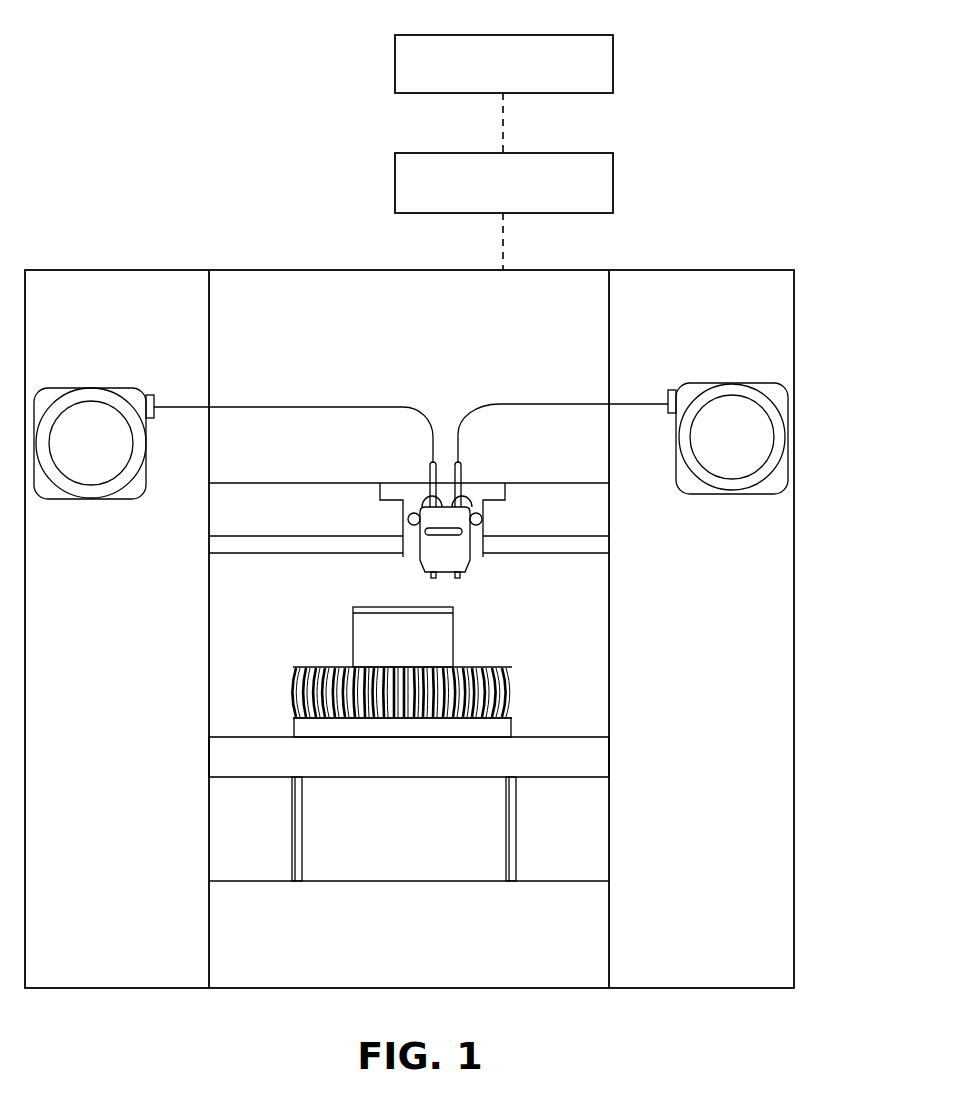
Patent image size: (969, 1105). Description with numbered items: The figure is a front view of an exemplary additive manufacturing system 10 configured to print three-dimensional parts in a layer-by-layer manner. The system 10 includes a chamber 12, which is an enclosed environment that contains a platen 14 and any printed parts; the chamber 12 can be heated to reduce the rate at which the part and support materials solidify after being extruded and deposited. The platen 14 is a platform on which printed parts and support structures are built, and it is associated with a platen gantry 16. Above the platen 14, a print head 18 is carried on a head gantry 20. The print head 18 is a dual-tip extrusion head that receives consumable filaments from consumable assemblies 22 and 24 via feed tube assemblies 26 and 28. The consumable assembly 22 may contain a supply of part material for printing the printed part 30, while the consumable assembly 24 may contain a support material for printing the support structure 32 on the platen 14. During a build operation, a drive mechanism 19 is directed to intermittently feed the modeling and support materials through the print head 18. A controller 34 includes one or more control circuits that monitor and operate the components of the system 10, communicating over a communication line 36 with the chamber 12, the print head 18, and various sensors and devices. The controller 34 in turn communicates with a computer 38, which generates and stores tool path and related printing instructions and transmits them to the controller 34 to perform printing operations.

The additive manufacturing system 10 is at (138, 63).
The chamber 12 is at (223, 687).
The platen 14 is at (603, 768).
The platen gantry 16 is at (522, 862).
The print head 18 is at (490, 520).
The drive mechanism 19 is at (480, 472).
The head gantry 20 is at (282, 533).
The consumable assembly 22 is at (81, 387).
The consumable assembly 24 is at (700, 383).
The feed tube assembly 26 is at (225, 407).
The feed tube assembly 28 is at (618, 404).
The 3D part 30 is at (362, 648).
The support structure 32 is at (513, 722).
The controller 34 is at (613, 172).
The communication line 36 is at (505, 247).
The computer 38 is at (613, 45).